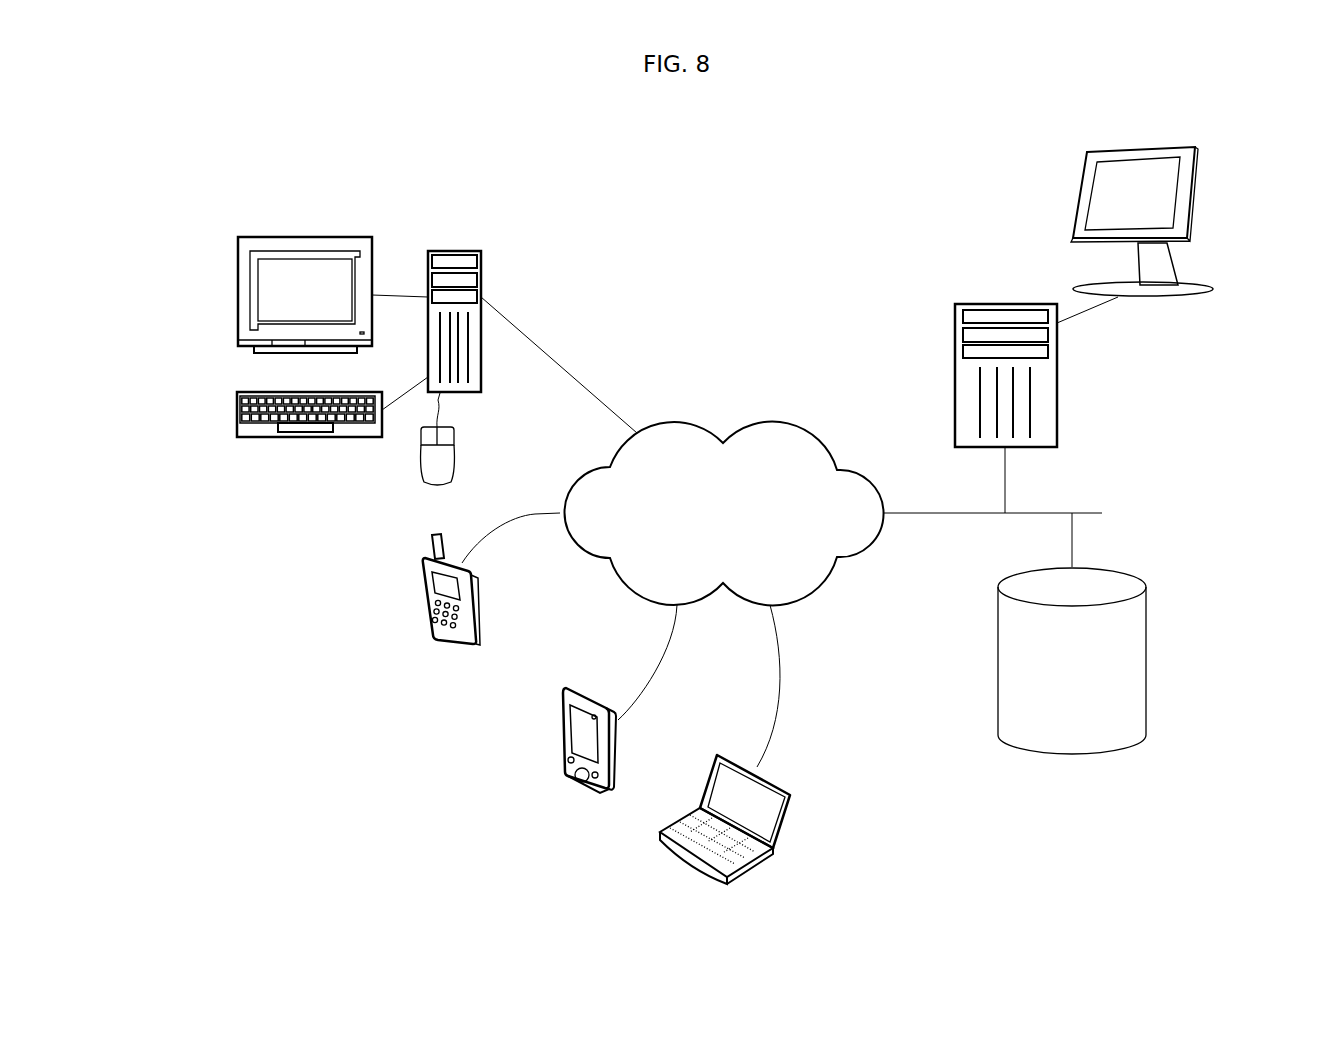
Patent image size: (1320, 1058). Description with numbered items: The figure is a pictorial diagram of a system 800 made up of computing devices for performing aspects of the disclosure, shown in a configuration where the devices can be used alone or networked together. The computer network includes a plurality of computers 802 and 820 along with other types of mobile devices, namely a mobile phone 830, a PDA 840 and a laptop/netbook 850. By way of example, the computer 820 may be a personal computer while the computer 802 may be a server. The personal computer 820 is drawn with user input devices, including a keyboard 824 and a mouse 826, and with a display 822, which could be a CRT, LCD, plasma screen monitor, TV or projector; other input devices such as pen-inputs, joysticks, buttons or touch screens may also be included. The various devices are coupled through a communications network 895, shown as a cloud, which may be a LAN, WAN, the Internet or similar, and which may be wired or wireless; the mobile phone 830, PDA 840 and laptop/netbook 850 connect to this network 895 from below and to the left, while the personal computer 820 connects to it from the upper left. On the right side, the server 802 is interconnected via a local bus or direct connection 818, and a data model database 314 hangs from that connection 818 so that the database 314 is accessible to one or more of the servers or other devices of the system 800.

The system 800 is at (1278, 93).
The computer 802 is at (1057, 378).
The data model database 314 is at (1147, 670).
The local bus or direct connection 818 is at (1062, 512).
The computer 820 is at (483, 251).
The display 822 is at (238, 288).
The keyboard 824 is at (237, 410).
The mouse 826 is at (454, 447).
The mobile phone 830 is at (418, 610).
The PDA 840 is at (562, 763).
The laptop/netbook 850 is at (662, 832).
The communications network 895 is at (708, 428).